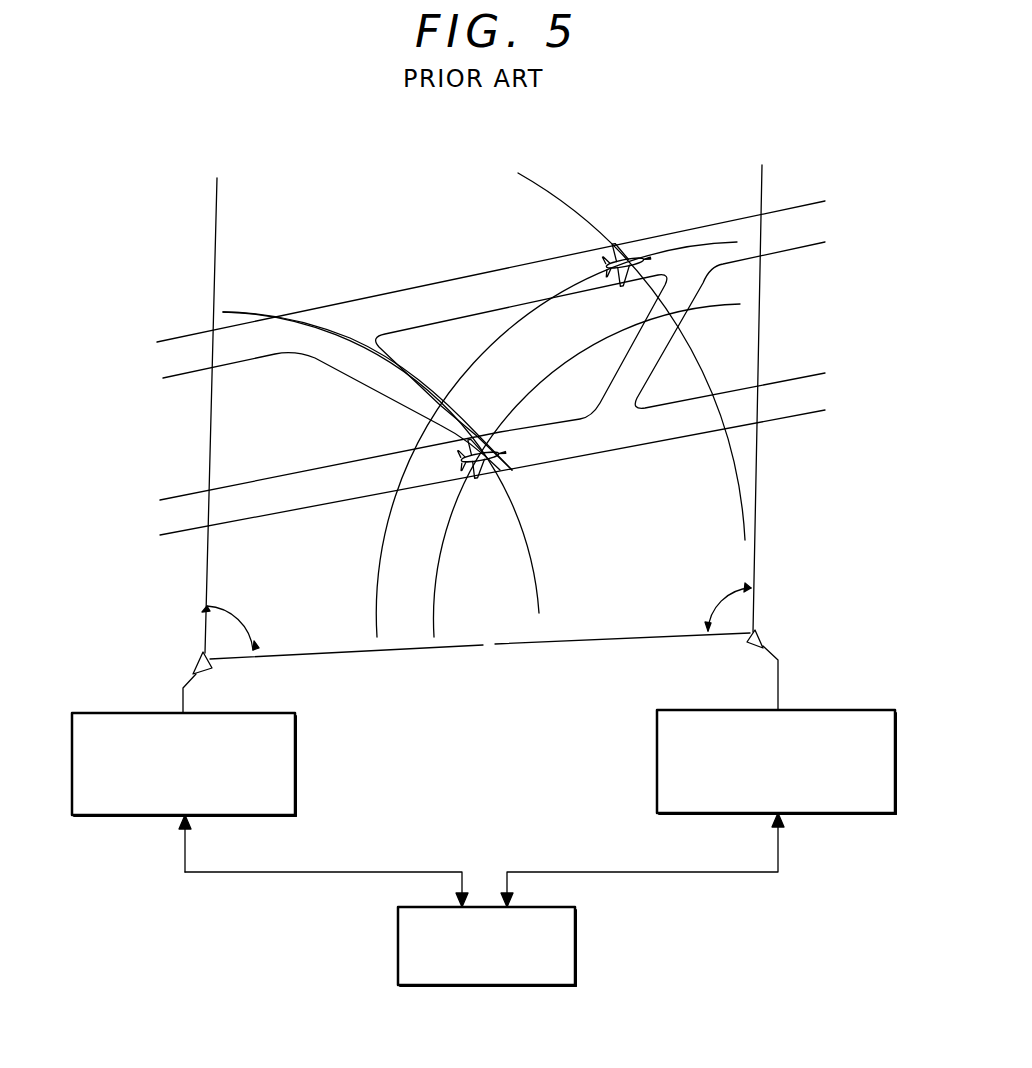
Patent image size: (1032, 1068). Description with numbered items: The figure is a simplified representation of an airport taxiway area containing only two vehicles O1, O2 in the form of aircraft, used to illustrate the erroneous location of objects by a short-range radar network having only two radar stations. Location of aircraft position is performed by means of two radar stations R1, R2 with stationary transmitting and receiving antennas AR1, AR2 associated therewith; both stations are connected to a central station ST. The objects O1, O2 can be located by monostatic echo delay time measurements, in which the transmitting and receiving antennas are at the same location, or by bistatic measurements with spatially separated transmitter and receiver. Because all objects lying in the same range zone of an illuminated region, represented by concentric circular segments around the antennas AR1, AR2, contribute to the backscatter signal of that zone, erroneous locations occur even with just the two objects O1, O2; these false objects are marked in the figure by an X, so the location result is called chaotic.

The vehicle O1 is at (628, 247).
The vehicle O2 is at (486, 460).
The antenna AR1 is at (208, 670).
The antenna AR2 is at (752, 642).
The radar station R1 is at (297, 758).
The radar station R2 is at (656, 750).
The central station ST is at (576, 950).